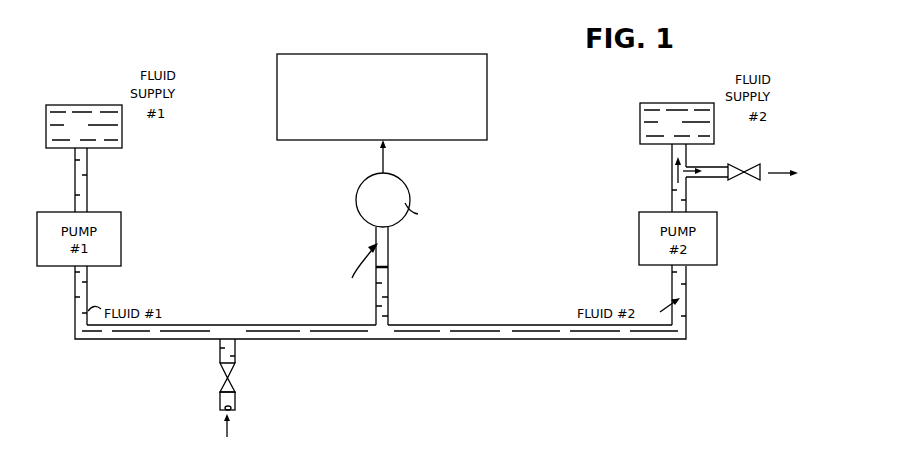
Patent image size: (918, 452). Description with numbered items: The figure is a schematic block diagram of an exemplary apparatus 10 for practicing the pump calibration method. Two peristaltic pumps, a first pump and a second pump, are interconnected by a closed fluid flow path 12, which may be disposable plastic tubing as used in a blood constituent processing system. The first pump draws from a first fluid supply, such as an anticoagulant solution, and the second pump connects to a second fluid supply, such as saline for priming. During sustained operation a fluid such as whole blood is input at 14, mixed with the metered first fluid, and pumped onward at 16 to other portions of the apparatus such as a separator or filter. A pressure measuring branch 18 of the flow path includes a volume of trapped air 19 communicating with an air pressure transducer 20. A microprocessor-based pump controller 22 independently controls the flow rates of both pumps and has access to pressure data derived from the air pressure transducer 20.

The fluid delivery system conduit 10 is at (147, 344).
The closed fluid flow path 12 is at (545, 340).
The fluid input 14 is at (227, 437).
The fluid output 16 is at (770, 173).
The pressure measuring branch 18 is at (390, 307).
The trapped air 19 is at (334, 279).
The air pressure transducer 20 is at (357, 193).
The microprocessor-based pump controller 22 is at (494, 74).